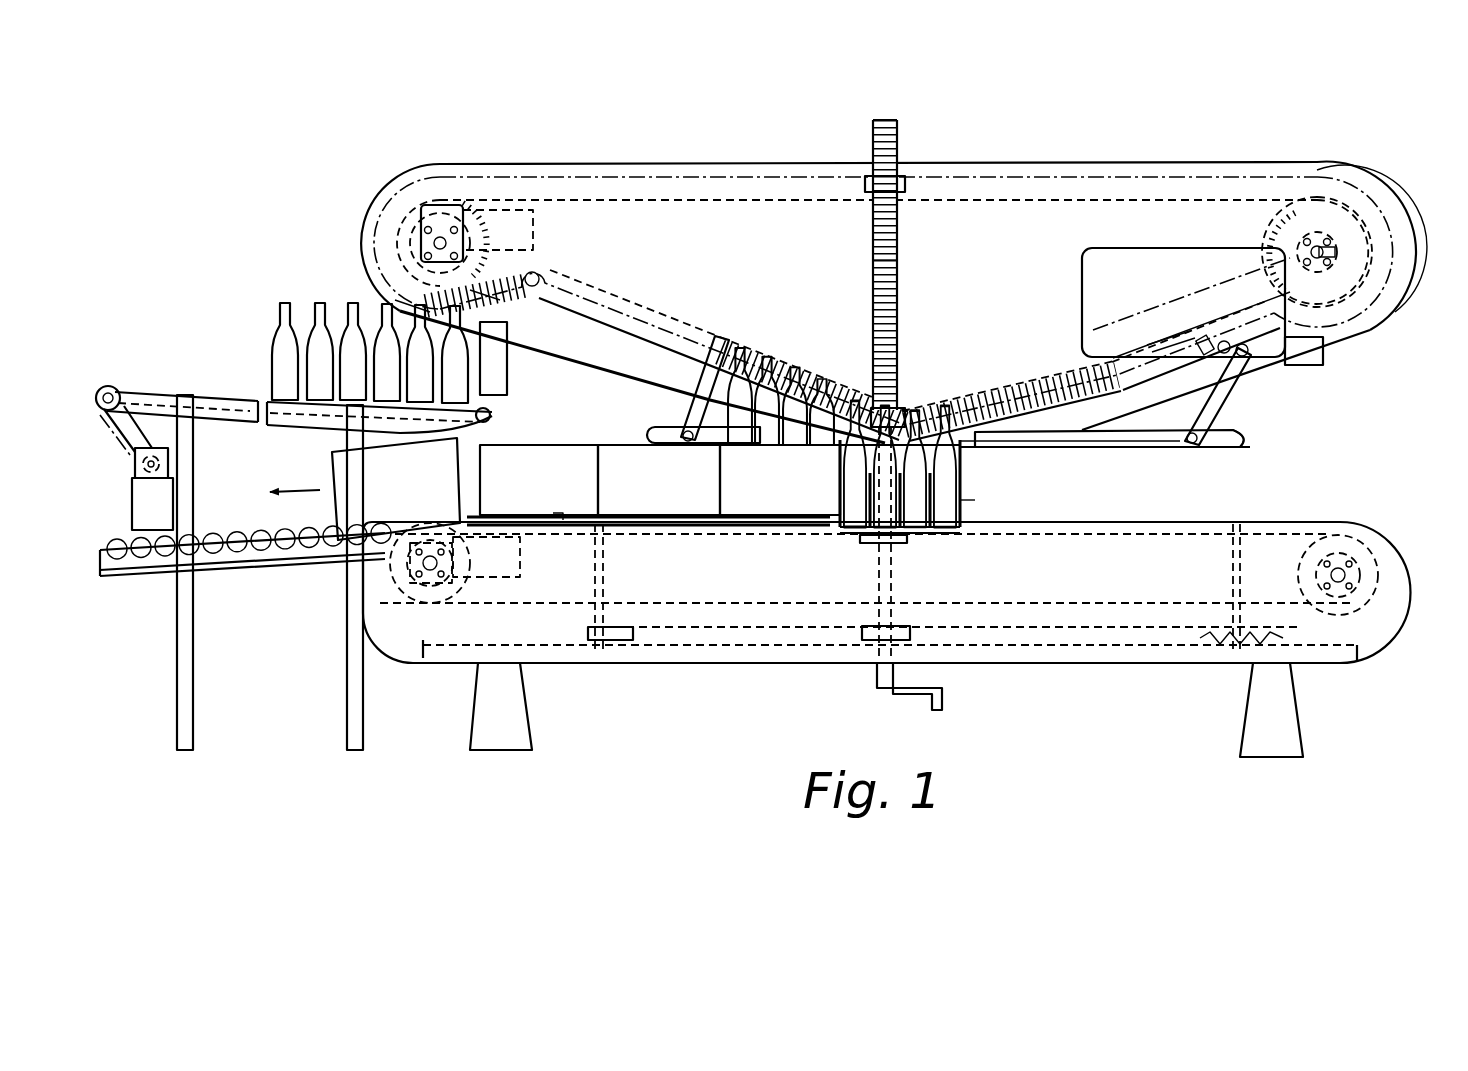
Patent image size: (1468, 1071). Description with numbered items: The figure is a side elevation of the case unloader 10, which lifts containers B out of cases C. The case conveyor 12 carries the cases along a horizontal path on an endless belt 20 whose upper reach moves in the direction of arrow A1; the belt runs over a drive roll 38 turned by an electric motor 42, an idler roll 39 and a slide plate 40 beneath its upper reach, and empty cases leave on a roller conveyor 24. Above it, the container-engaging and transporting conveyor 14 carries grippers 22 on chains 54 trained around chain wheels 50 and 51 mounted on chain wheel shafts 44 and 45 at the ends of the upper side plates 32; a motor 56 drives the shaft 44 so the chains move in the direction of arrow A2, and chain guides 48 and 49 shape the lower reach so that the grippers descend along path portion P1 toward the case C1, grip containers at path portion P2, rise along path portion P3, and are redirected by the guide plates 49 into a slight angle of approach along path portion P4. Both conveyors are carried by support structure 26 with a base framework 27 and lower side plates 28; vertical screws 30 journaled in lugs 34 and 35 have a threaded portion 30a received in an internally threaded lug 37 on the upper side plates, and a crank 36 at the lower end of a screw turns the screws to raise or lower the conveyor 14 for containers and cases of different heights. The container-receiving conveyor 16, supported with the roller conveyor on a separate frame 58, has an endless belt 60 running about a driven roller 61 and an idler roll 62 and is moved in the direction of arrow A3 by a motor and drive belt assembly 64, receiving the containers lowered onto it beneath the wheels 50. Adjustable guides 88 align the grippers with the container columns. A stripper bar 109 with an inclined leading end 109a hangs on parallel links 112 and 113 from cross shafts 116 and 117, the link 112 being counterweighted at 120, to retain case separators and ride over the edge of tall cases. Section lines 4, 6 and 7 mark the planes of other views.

The case unloader 10 is at (1256, 166).
The case conveyor 12 is at (1413, 598).
The container-engaging and transporting conveyor 14 is at (1402, 322).
The container-receiving conveyor 16 is at (181, 390).
The endless belt 20 is at (1072, 522).
The grippers 22 is at (1060, 418).
The roller conveyor 24 is at (270, 565).
The support structure 26 is at (1305, 722).
The base framework 27 is at (1148, 663).
The lower side plates 28 is at (1393, 636).
The vertical screws 30 is at (897, 152).
The threaded portion 30a is at (897, 292).
The upper side plates 32 is at (1383, 198).
The lug 34 is at (860, 539).
The lug 35 is at (868, 626).
The crank 36 is at (876, 678).
The internally threaded lug 37 is at (865, 182).
The drive roll 38 is at (470, 596).
The idler roll 39 is at (1299, 565).
The slide plate 40 is at (1107, 538).
The electric motor 42 is at (522, 565).
The chain wheel shaft 44 is at (425, 238).
The chain wheel shaft 45 is at (1304, 244).
The chain guide 48 is at (950, 412).
The chain guide 49 is at (540, 278).
The chain wheels 50 is at (448, 215).
The chain wheels 51 is at (1326, 228).
The chain 54 is at (968, 195).
The motor 56 is at (536, 234).
The separate frame 58 is at (194, 680).
The endless belt 60 is at (237, 408).
The driven roller 61 is at (100, 386).
The idler roll 62 is at (491, 416).
The motor and drive belt assembly 64 is at (162, 503).
The adjustable guides 88 is at (1215, 320).
The stripper bar 109 is at (1170, 447).
The leading end 109a is at (1242, 445).
The parallel link 112 is at (1228, 402).
The parallel link 113 is at (712, 448).
The cross shaft 116 is at (1247, 348).
The cross shaft 117 is at (740, 338).
The counterweight 120 is at (1313, 355).
The section line 4- 4 is at (958, 354).
The section line 6- 6 is at (1100, 307).
The section line 7- 7 is at (247, 515).
The arrow A1 is at (1000, 487).
The arrow A2 is at (658, 358).
The arrow A3 is at (262, 360).
The containers B is at (950, 522).
The cases C is at (806, 496).
The case C1 is at (968, 503).
The inclined path portion P1 is at (1187, 425).
The path portion P2 is at (964, 468).
The inclined path portion P3 is at (759, 396).
The path portion P4 is at (500, 332).